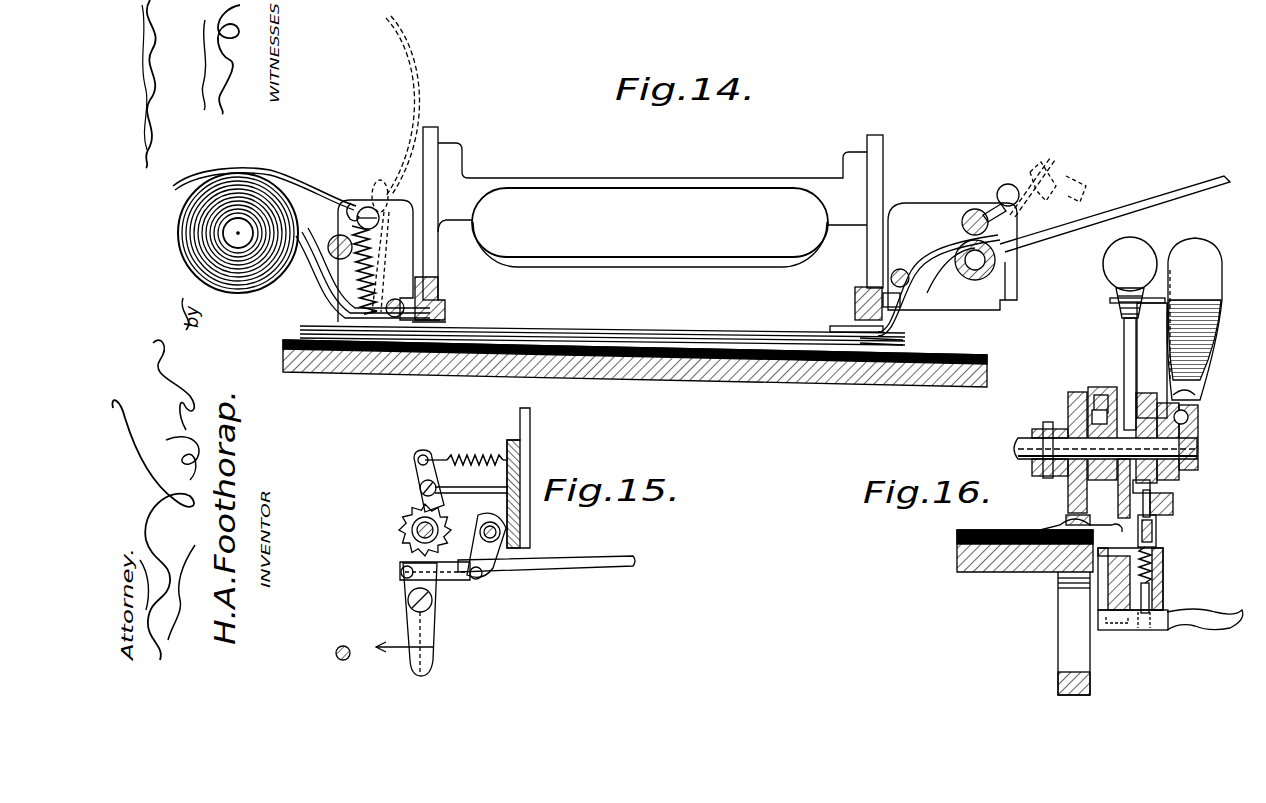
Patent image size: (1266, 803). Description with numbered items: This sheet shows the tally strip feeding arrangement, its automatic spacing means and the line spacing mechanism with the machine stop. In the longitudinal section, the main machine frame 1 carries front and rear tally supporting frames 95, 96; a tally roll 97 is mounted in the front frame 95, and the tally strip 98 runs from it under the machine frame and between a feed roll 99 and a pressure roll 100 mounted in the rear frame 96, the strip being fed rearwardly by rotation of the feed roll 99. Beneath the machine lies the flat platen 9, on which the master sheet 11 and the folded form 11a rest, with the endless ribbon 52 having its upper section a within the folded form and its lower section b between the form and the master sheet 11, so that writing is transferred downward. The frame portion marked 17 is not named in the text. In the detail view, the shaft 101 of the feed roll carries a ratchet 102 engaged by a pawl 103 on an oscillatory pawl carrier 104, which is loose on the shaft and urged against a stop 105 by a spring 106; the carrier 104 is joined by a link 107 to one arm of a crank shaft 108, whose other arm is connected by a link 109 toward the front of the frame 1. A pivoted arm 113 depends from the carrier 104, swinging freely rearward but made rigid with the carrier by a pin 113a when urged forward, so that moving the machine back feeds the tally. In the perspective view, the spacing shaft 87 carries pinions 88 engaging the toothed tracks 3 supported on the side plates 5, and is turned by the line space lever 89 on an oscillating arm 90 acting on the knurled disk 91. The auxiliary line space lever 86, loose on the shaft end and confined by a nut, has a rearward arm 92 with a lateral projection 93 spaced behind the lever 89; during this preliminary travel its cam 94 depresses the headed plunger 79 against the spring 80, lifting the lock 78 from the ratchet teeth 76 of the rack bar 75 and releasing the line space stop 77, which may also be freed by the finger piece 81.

In FIG. 14, the frame 17 is at (884, 150).
In FIG. 14, the tally roll 97 is at (182, 235).
In FIG. 14, the tally strip 98 is at (312, 282).
In FIG. 14, the tally supporting frame 95 is at (384, 261).
In FIG. 14, the endless ribbon 52 is at (302, 327).
In FIG. 14, the work sheet 11 is at (655, 343).
In FIG. 14, the folded form 11a is at (728, 345).
In FIG. 14, the upper section of the ribbon a is at (895, 341).
In FIG. 14, the lower section of the ribbon b is at (912, 352).
In FIG. 14, the platen 9 is at (814, 384).
In FIG. 16, the platen 9 is at (958, 573).
In FIG. 14, the tally supporting frame 96 is at (1054, 256).
In FIG. 14, the pressure roll 100 is at (978, 210).
In FIG. 14, the feed roll 99 is at (998, 266).
In FIG. 14, the shaft 101 is at (972, 282).
In FIG. 15, the shaft 101 is at (412, 527).
In FIG. 15, the main machine frame 1 is at (531, 423).
In FIG. 15, the spring 106 is at (466, 455).
In FIG. 15, the pawl carrier 104 is at (416, 458).
In FIG. 15, the stop 105 is at (471, 480).
In FIG. 15, the pawl 103 is at (412, 494).
In FIG. 15, the ratchet 102 is at (400, 535).
In FIG. 15, the crank shaft 108 is at (502, 533).
In FIG. 15, the link 109 is at (598, 568).
In FIG. 15, the link 107 is at (452, 578).
In FIG. 15, the pin 113a is at (400, 578).
In FIG. 15, the pivoted arm 113 is at (432, 632).
In FIG. 16, the line space lever 89 is at (1134, 277).
In FIG. 16, the oscillating arm 90 is at (1120, 350).
In FIG. 16, the lateral projection 93 is at (1158, 304).
In FIG. 16, the auxiliary line space lever 86 is at (1200, 264).
In FIG. 16, the rearwardly extending arm 92 is at (1210, 318).
In FIG. 16, the pinion 88 is at (1072, 395).
In FIG. 16, the spacing shaft 87 is at (1015, 446).
In FIG. 16, the disk 91 is at (1111, 488).
In FIG. 16, the cam 94 is at (1160, 510).
In FIG. 16, the tracks 3 is at (1062, 525).
In FIG. 16, the headed plunger 79 is at (1157, 528).
In FIG. 16, the spring 80 is at (1155, 562).
In FIG. 16, the line space stop 77 is at (1160, 588).
In FIG. 16, the rack bar 75 is at (1106, 596).
In FIG. 16, the lock 78 is at (1140, 630).
In FIG. 16, the ratchet teeth 76 is at (1116, 630).
In FIG. 16, the finger piece 81 is at (1218, 627).
In FIG. 16, the side plate 5 is at (1058, 680).